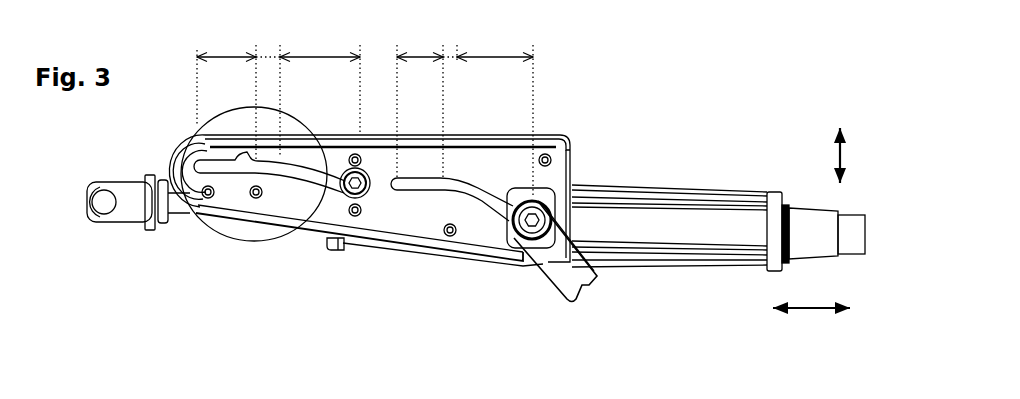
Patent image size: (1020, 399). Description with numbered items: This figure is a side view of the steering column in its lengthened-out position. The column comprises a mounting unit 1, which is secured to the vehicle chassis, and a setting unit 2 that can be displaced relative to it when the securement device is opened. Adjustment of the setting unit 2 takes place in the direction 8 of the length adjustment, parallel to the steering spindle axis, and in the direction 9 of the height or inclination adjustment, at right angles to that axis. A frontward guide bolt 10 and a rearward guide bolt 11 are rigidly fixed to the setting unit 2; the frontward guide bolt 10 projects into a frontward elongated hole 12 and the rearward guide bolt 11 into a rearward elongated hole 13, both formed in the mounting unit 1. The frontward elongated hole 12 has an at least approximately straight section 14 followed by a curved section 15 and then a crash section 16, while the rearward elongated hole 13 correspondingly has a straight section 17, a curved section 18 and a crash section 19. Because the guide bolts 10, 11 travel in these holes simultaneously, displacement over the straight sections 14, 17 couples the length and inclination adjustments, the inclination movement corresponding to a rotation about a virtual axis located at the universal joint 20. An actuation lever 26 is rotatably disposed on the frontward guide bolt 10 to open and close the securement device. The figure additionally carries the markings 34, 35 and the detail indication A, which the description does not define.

The mounting unit 1 is at (303, 234).
The setting unit 2 is at (683, 272).
The direction of the length adjustment 8 is at (815, 310).
The direction of the height or inclination adjustment 9 is at (838, 153).
The frontward guide bolt 10 is at (523, 242).
The rearward guide bolt 11 is at (355, 240).
The frontward elongated hole 12 is at (473, 198).
The rearward elongated hole 13 is at (273, 172).
The straight section 14 is at (498, 56).
The curved section 15 is at (453, 57).
The crash section 16 is at (413, 56).
The straight section 17 is at (320, 56).
The curved section 18 is at (265, 61).
The crash section 19 is at (204, 56).
The universal joint 20 is at (150, 232).
The actuation lever 26 is at (566, 272).
The cam ring 34 is at (498, 197).
The lever tip 35 is at (482, 203).
The detail A is at (302, 121).